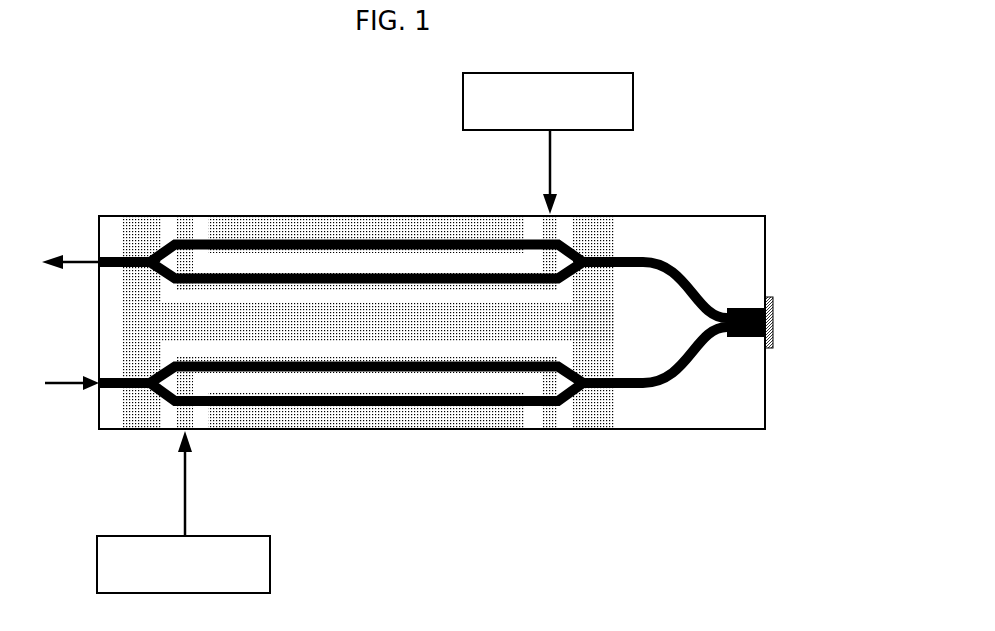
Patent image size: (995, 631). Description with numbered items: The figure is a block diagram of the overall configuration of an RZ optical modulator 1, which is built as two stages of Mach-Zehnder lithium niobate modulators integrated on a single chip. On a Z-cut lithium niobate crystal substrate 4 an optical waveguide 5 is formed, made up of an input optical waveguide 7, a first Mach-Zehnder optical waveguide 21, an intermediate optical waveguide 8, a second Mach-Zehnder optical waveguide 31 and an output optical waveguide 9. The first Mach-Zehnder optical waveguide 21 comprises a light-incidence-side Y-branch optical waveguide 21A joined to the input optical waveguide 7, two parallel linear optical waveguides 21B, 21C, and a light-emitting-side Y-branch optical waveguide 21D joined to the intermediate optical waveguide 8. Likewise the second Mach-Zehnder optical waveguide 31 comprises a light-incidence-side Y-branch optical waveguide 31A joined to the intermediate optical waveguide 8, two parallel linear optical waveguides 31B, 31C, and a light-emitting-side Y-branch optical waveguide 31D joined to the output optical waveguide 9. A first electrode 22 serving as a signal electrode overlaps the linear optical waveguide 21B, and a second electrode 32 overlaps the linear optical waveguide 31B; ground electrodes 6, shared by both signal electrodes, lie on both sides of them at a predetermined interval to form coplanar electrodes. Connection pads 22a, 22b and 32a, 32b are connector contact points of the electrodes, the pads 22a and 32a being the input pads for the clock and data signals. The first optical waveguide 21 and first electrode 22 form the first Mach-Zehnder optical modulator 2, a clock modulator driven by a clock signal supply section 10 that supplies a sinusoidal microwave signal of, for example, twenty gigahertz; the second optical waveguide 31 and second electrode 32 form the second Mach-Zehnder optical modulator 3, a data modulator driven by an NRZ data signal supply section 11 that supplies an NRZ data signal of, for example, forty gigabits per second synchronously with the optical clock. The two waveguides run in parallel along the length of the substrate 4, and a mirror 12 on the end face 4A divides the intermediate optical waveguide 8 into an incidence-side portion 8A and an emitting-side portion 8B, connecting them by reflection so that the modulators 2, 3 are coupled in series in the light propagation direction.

The RZ optical modulator 1 is at (240, 178).
The first Mach-Zehnder optical modulator 2 is at (168, 408).
The second Mach-Zehnder optical modulator 3 is at (167, 216).
The lithium niobate crystal substrate 4 is at (755, 410).
The end face of substrate 4A is at (768, 240).
The optical waveguide 5 is at (388, 326).
The ground electrode 6 is at (478, 216).
The input optical waveguide 7 is at (99, 378).
The intermediate optical waveguide 8 is at (666, 396).
The incidence-side portion 8A is at (690, 363).
The emitting-side portion 8B is at (690, 278).
The output optical waveguide 9 is at (99, 258).
The clock signal supply section 10 is at (270, 565).
The NRZ data signal supply section 11 is at (633, 100).
The mirror 12 is at (775, 305).
The first Mach-Zehnder optical waveguide 21 is at (297, 412).
The light-incidence-side Y-branch optical waveguide 21A is at (147, 362).
The linear optical waveguide 21B is at (410, 372).
The linear optical waveguide 21C is at (354, 407).
The light-emitting-side Y-branch optical waveguide 21D is at (583, 376).
The first electrode 22 is at (465, 380).
The connection pad 22a is at (185, 432).
The connection pad 22b is at (552, 430).
The second Mach-Zehnder optical waveguide 31 is at (435, 232).
The light-incidence-side Y-branch optical waveguide 31A is at (620, 216).
The linear optical waveguide 31B is at (370, 283).
The linear optical waveguide 31C is at (278, 216).
The light-emitting-side Y-branch optical waveguide 31D is at (135, 216).
The second electrode 32 is at (320, 272).
The connection pad 32a is at (545, 213).
The connection pad 32b is at (187, 216).